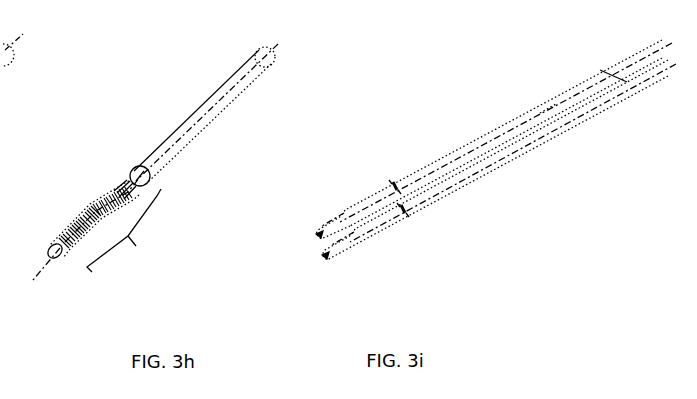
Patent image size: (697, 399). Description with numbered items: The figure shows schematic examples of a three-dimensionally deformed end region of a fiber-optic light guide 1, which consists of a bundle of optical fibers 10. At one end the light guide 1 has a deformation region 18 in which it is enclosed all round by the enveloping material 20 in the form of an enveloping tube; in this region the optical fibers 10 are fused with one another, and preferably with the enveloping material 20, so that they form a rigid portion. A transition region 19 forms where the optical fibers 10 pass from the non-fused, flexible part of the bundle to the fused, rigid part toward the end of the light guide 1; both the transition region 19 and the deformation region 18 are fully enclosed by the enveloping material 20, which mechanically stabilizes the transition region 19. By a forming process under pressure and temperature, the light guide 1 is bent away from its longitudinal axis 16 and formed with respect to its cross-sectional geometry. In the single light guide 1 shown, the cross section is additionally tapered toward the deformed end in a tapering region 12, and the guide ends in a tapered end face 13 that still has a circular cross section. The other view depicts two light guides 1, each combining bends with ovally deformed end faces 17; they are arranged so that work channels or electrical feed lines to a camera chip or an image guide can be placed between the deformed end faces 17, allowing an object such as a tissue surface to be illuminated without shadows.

In FIG. 3h, the light guide 1 is at (245, 62).
In FIG. 3i, the light guide 1 is at (628, 80).
In FIG. 3h, the optical fibers 10 is at (200, 105).
In FIG. 3i, the optical fibers 10 is at (590, 103).
In FIG. 3h, the longitudinal axis 16 is at (178, 140).
In FIG. 3i, the longitudinal axis 16 is at (552, 127).
In FIG. 3h, the enveloping material 20 is at (128, 180).
In FIG. 3i, the enveloping material 20 is at (403, 207).
In FIG. 3h, the transition region 19 is at (112, 192).
In FIG. 3h, the deformation region 18 is at (82, 232).
In FIG. 3h, the tapered end face 13 is at (58, 262).
In FIG. 3h, the tapering region 12 is at (106, 226).
In FIG. 3i, the deformed end face 17 is at (323, 253).